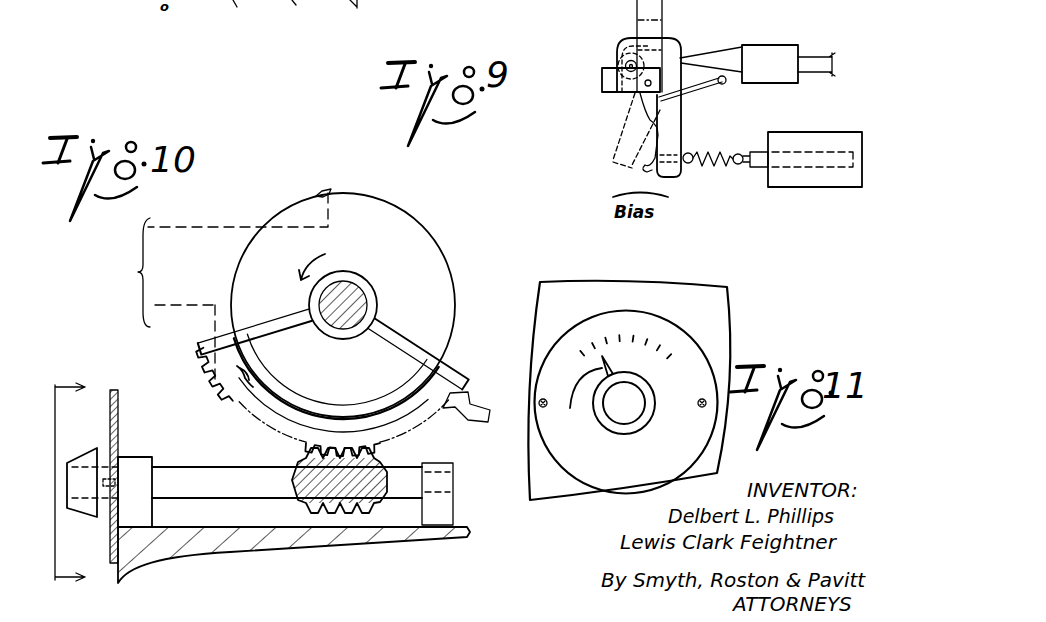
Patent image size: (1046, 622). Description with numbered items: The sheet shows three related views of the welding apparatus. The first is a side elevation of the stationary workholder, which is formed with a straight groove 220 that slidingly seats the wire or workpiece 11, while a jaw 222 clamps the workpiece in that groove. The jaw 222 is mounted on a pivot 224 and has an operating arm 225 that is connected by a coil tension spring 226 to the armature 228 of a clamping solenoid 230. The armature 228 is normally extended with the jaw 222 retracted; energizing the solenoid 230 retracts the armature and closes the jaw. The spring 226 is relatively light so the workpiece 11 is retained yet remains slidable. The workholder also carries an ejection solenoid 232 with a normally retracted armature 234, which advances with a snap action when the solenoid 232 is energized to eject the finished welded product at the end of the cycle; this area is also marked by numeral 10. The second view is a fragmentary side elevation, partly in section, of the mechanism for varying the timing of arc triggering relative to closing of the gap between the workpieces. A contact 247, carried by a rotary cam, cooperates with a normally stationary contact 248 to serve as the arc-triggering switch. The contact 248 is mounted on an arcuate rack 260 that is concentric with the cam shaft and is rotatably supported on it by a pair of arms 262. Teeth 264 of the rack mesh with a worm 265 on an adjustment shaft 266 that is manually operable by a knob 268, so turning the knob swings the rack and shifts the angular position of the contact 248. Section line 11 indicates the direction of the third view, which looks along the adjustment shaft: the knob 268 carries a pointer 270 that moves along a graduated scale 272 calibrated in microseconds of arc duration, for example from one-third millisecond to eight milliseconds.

In FIG. 9, the switch block 10 is at (620, 65).
In FIG. 9, the workpiece 11 is at (627, 72).
In FIG. 10, the workpiece 11 is at (46, 484).
In FIG. 9, the straight groove 220 is at (632, 70).
In FIG. 9, the jaw 222 is at (630, 38).
In FIG. 9, the pivot 224 is at (677, 97).
In FIG. 9, the operating arm 225 is at (672, 143).
In FIG. 9, the coil tension spring 226 is at (713, 167).
In FIG. 9, the armature 228 is at (760, 170).
In FIG. 9, the clamping solenoid 230 is at (830, 177).
In FIG. 9, the ejection solenoid 232 is at (770, 57).
In FIG. 9, the armature 234 is at (700, 63).
In FIG. 10, the contact 247 is at (333, 192).
In FIG. 10, the stationary contact 248 is at (255, 378).
In FIG. 10, the arcuate rack 260 is at (347, 443).
In FIG. 10, the arms 262 is at (268, 317).
In FIG. 10, the teeth 264 is at (466, 420).
In FIG. 10, the worm 265 is at (350, 492).
In FIG. 10, the adjustment shaft 266 is at (225, 480).
In FIG. 10, the knob 268 is at (90, 487).
In FIG. 11, the knob 268 is at (620, 408).
In FIG. 10, the pointer 270 is at (108, 447).
In FIG. 11, the pointer 270 is at (582, 393).
In FIG. 11, the graduated scale 272 is at (676, 352).